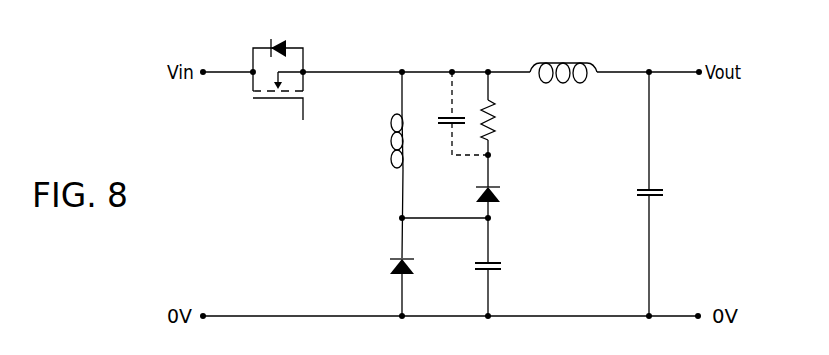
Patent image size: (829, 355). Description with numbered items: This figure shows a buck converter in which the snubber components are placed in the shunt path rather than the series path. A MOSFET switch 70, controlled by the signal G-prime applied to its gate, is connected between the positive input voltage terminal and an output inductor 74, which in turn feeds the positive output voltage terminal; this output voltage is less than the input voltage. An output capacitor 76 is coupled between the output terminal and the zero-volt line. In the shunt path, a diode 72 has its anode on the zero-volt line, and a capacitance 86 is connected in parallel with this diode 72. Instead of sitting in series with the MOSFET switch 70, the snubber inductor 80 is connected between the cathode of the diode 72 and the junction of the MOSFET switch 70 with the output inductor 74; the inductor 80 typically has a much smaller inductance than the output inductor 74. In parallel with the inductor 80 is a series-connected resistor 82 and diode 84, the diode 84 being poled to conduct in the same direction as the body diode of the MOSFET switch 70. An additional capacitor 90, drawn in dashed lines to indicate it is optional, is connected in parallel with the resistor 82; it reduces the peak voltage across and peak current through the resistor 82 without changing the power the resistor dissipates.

The MOSFET switch 70 is at (278, 104).
The diode 72 is at (388, 263).
The output inductor 74 is at (558, 85).
The output capacitor 76 is at (636, 193).
The inductor 80 is at (390, 160).
The resistor 82 is at (496, 124).
The diode 84 is at (500, 182).
The capacitance 86 is at (501, 268).
The capacitor 90 is at (438, 120).